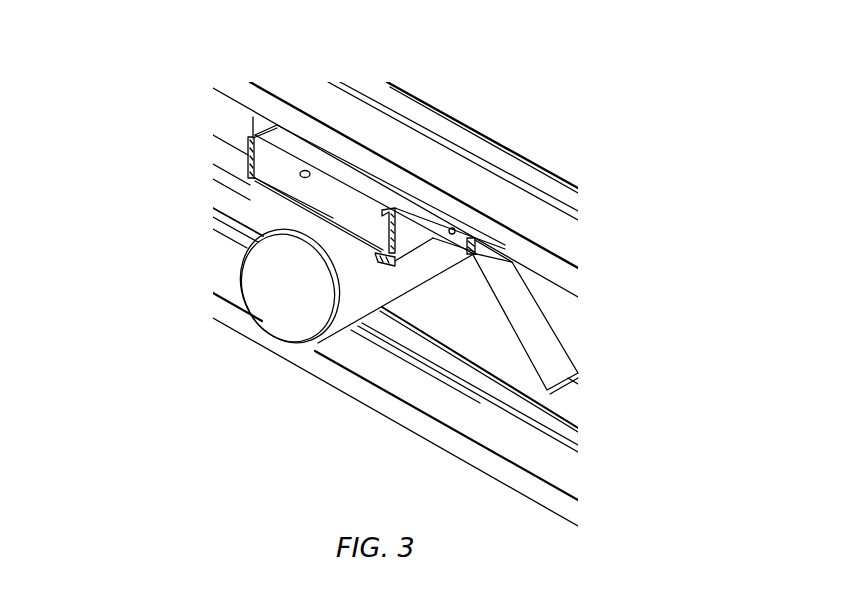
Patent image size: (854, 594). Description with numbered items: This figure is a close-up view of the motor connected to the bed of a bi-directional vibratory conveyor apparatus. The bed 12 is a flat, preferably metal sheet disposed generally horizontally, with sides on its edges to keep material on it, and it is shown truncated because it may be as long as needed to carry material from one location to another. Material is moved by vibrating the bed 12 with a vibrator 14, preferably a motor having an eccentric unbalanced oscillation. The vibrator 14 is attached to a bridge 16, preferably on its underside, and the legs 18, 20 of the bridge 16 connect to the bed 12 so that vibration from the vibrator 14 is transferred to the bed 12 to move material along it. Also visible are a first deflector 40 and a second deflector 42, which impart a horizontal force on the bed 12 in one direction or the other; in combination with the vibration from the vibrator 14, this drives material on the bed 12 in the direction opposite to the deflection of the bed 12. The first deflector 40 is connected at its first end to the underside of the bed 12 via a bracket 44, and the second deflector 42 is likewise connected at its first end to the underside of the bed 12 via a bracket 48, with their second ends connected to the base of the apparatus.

The bed 12 is at (427, 147).
The vibrator 14 is at (257, 307).
The bridge 16 is at (317, 205).
The leg 18 is at (408, 227).
The leg 20 is at (250, 160).
The first deflector 40 is at (538, 332).
The second deflector 42 is at (225, 165).
The bracket 44 is at (470, 240).
The bracket 48 is at (258, 122).